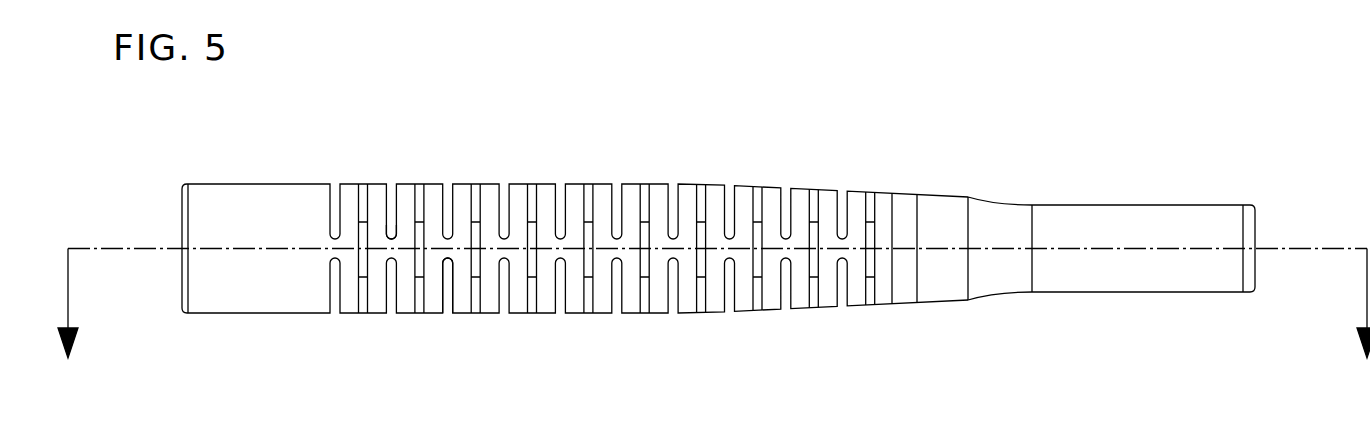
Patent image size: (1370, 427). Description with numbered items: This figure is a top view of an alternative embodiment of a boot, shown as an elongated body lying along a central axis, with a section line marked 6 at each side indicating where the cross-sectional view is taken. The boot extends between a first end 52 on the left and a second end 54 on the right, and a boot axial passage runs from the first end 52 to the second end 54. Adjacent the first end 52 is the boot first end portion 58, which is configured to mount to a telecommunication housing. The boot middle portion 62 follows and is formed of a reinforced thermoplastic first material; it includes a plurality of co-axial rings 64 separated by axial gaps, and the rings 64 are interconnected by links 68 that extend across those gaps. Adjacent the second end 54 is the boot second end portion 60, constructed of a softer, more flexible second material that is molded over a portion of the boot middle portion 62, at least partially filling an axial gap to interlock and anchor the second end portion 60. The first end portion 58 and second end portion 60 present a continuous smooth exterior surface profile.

The first end 52 is at (181, 200).
The second end 54 is at (1258, 223).
The boot first end portion 58 is at (274, 183).
The boot second end portion 60 is at (1083, 296).
The boot middle portion 62 is at (637, 328).
The co-axial rings 64 is at (434, 314).
The links 68 is at (392, 249).
The section line 6- 6 is at (714, 307).